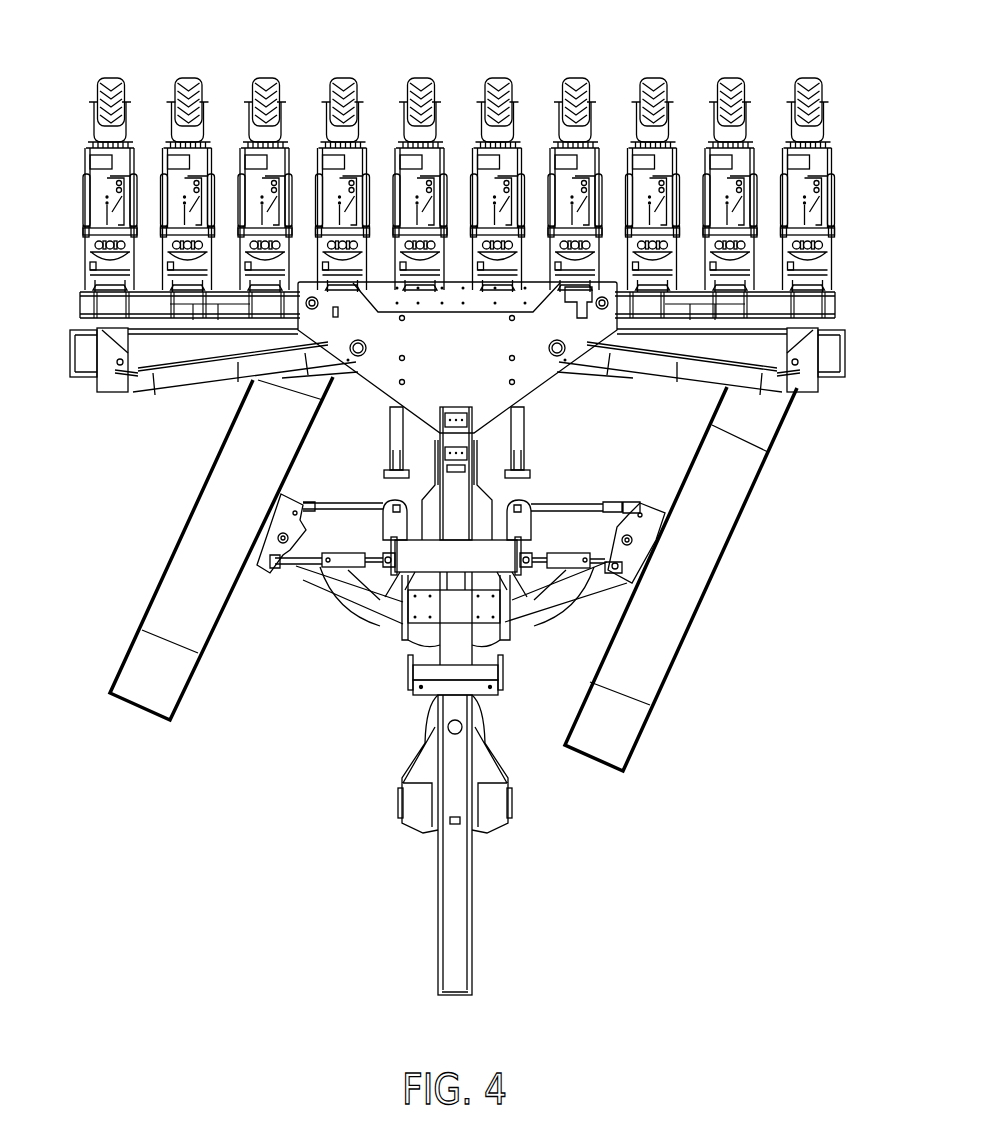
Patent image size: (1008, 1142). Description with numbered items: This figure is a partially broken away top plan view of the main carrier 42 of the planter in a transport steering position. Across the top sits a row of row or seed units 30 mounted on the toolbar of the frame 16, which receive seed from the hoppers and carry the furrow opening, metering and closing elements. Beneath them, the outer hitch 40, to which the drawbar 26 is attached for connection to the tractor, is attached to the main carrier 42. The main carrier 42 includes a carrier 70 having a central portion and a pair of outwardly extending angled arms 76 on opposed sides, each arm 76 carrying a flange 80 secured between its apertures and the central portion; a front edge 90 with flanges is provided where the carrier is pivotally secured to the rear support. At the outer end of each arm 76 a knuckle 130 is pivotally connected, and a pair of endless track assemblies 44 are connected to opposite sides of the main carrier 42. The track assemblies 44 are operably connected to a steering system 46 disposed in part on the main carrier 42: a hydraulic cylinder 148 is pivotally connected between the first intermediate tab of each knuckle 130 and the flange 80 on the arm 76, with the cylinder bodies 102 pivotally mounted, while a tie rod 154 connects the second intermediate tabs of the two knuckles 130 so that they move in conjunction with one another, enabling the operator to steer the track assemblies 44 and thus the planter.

The row or seed units 30 is at (179, 50).
The toolbar frame 16 is at (853, 304).
The front edge 90 is at (545, 399).
The steering system 46 is at (366, 486).
The main carrier 42 is at (390, 632).
The cylinder pivot body 102 is at (398, 516).
The knuckles 130 is at (292, 476).
The tie rod 154 is at (327, 500).
The angled arms 76 is at (316, 574).
The hydraulic cylinder 148 is at (564, 553).
The flange 80 is at (358, 592).
The carrier 70 is at (538, 624).
The outer hitch 40 is at (398, 686).
The drawbar 26 is at (468, 915).
The endless track assemblies 44 is at (116, 628).